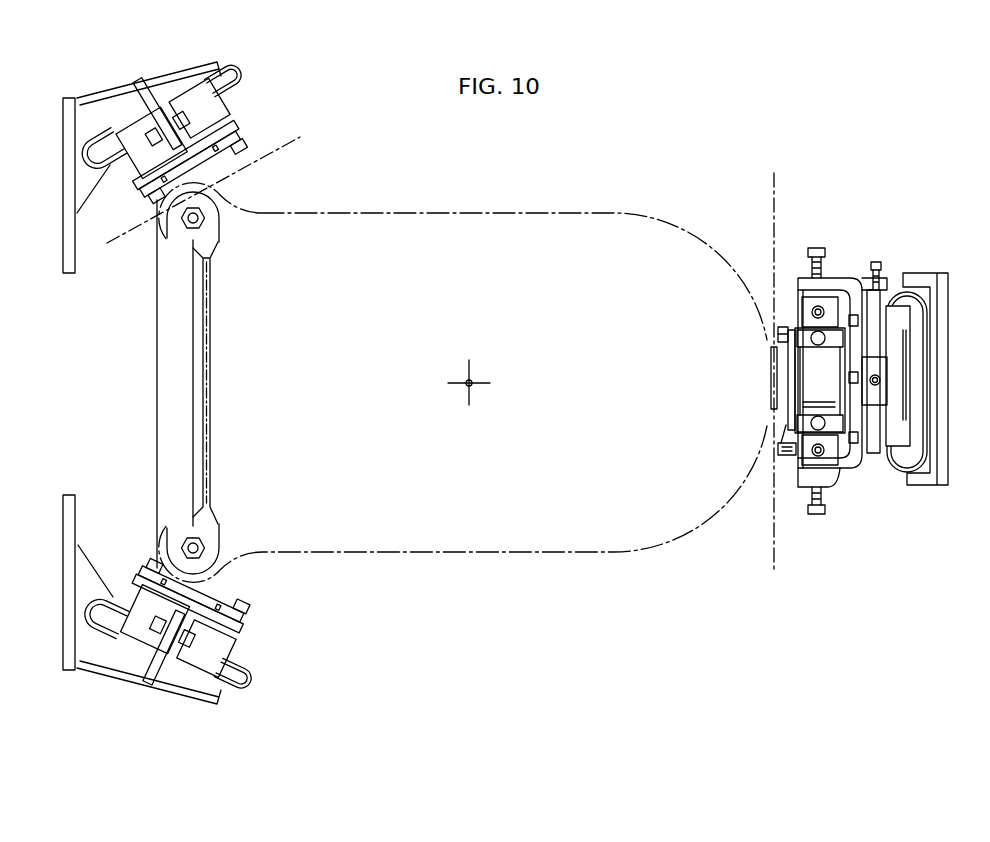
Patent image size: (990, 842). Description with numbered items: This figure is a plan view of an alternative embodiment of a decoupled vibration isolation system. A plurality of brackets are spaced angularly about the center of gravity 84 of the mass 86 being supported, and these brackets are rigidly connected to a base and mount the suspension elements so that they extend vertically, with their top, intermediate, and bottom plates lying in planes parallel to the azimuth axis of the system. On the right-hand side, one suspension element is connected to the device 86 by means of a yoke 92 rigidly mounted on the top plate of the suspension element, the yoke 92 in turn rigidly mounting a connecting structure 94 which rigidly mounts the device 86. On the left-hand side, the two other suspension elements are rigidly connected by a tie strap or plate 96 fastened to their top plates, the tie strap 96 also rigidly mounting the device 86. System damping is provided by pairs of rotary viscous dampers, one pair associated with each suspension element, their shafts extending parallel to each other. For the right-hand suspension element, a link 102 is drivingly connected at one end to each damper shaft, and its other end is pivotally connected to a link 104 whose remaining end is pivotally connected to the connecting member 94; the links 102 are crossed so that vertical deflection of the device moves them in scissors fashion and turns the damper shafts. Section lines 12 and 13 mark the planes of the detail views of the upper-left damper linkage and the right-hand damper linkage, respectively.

The section line 12- 12 is at (297, 147).
The section line 13- 13 is at (765, 183).
The center of gravity 84 is at (477, 378).
The mass 86 is at (471, 212).
The yoke 92 is at (842, 283).
The connecting structure 94 is at (780, 378).
The tie strap 96 is at (157, 404).
The link 102 is at (783, 400).
The link 104 is at (778, 444).